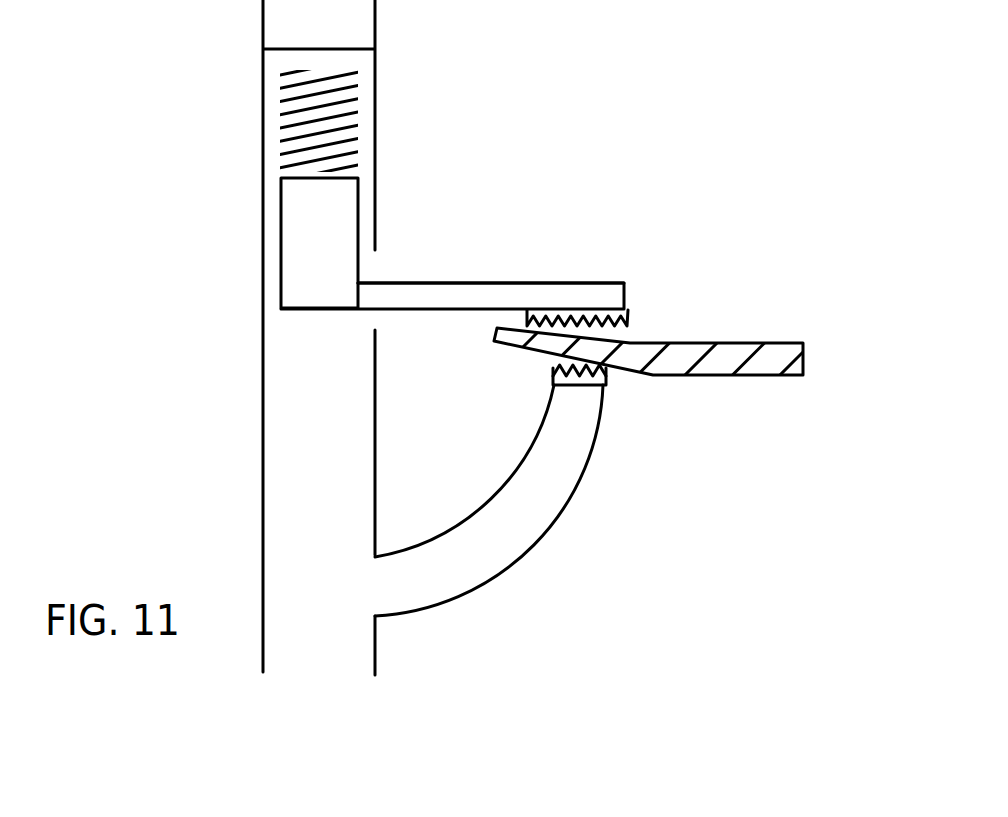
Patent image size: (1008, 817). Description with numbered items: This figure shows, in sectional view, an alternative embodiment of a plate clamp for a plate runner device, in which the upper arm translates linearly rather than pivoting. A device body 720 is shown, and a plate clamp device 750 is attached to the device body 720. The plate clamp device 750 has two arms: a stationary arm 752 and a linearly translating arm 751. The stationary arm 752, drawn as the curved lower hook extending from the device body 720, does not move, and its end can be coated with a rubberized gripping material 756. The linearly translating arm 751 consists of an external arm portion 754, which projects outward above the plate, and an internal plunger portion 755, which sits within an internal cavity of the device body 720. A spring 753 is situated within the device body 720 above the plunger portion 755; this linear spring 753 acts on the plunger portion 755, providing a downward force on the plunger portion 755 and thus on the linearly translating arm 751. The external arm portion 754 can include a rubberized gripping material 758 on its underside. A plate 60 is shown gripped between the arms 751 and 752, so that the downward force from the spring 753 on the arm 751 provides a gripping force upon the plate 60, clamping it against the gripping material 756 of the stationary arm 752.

The device body 720 is at (375, 652).
The plate clamp device 750 is at (783, 670).
The linearly translating arm 751 is at (423, 283).
The stationary arm 752 is at (570, 522).
The spring 753 is at (282, 138).
The external arm portion 754 is at (501, 292).
The internal plunger portion 755 is at (300, 250).
The rubberized gripping material 756 is at (613, 380).
The rubberized gripping material 758 is at (628, 318).
The plate 60 is at (715, 334).